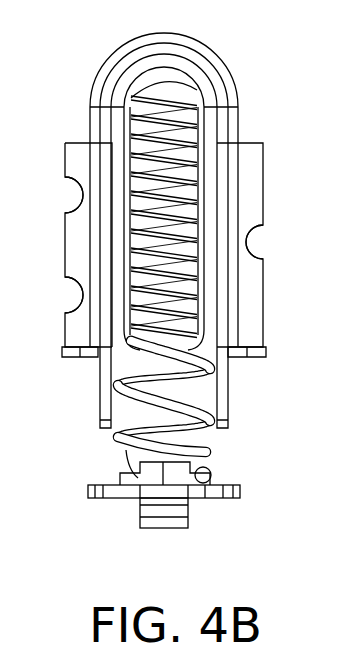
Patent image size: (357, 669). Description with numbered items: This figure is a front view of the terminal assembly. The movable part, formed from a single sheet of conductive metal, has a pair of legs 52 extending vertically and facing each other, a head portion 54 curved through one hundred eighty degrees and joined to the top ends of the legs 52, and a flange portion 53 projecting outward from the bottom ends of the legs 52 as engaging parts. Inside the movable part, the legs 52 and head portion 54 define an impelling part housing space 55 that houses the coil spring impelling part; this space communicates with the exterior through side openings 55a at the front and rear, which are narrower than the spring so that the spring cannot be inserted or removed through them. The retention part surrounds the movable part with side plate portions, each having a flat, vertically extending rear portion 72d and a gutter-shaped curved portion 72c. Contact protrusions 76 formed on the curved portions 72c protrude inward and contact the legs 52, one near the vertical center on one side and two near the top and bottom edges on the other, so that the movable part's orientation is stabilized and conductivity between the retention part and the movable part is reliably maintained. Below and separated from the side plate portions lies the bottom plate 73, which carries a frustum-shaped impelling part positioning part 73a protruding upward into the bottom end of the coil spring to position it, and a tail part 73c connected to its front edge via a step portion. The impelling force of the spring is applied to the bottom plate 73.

The legs 52 is at (92, 116).
The flange portion 53 is at (267, 350).
The head portion 54 is at (96, 70).
The impelling part housing space 55 is at (196, 110).
The side openings 55a is at (200, 118).
The curved portion 72c is at (262, 166).
The rear portion 72d is at (98, 396).
The bottom plate 73 is at (88, 492).
The impelling part positioning part 73a is at (211, 463).
The tail part 73c is at (190, 518).
The contact protrusion 76 is at (66, 293).